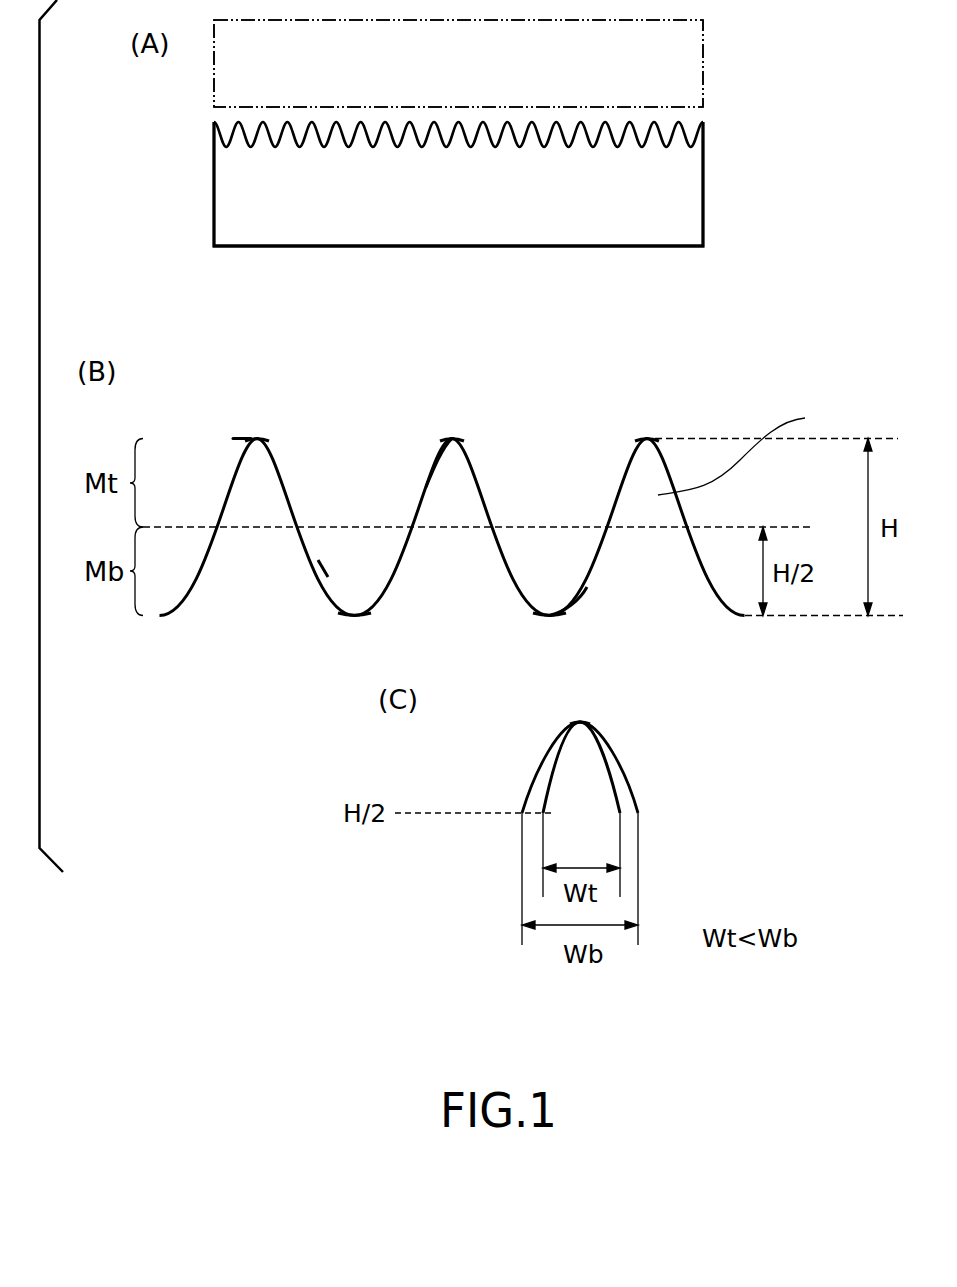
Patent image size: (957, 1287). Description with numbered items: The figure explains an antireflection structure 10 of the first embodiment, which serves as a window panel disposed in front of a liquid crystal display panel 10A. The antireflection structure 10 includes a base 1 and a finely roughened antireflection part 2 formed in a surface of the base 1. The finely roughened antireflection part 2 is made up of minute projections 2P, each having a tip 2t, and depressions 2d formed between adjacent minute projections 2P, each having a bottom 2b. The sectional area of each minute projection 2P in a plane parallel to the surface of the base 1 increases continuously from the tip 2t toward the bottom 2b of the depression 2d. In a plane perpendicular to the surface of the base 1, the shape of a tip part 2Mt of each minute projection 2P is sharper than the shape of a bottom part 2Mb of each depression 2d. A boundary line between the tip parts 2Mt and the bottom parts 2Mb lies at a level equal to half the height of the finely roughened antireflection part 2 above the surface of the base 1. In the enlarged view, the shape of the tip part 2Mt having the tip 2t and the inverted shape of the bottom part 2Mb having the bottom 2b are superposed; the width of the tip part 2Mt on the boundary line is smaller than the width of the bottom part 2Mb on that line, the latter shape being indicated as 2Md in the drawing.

The base 1 is at (672, 190).
The finely roughened antireflection part 2 is at (535, 135).
The antireflection structure 10 is at (714, 113).
The liquid crystal display panel 10A is at (672, 49).
The tip 2t is at (257, 438).
The bottom 2b is at (353, 613).
The minute projection 2P is at (250, 443).
The depression 2d is at (318, 569).
The tip part 2Mt is at (547, 798).
The bottom part 2Mb is at (587, 587).
The outer profile portion 2Md is at (603, 547).